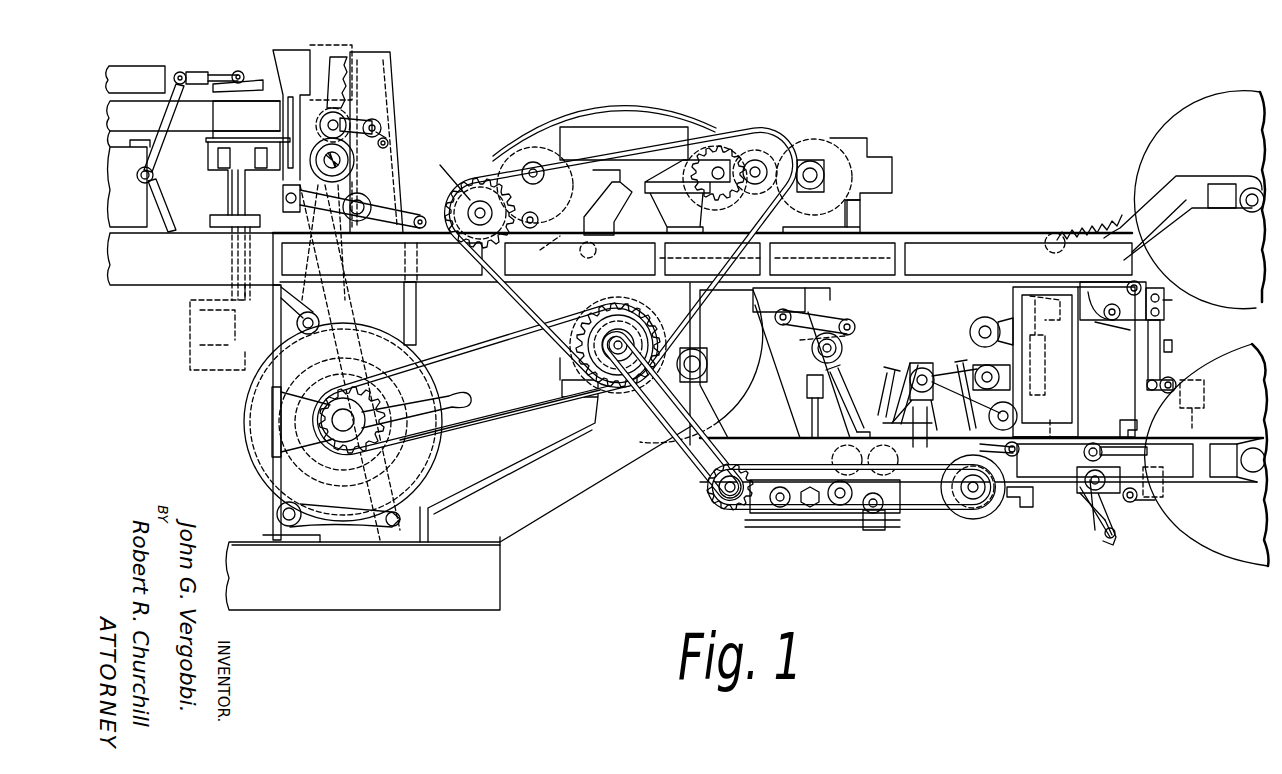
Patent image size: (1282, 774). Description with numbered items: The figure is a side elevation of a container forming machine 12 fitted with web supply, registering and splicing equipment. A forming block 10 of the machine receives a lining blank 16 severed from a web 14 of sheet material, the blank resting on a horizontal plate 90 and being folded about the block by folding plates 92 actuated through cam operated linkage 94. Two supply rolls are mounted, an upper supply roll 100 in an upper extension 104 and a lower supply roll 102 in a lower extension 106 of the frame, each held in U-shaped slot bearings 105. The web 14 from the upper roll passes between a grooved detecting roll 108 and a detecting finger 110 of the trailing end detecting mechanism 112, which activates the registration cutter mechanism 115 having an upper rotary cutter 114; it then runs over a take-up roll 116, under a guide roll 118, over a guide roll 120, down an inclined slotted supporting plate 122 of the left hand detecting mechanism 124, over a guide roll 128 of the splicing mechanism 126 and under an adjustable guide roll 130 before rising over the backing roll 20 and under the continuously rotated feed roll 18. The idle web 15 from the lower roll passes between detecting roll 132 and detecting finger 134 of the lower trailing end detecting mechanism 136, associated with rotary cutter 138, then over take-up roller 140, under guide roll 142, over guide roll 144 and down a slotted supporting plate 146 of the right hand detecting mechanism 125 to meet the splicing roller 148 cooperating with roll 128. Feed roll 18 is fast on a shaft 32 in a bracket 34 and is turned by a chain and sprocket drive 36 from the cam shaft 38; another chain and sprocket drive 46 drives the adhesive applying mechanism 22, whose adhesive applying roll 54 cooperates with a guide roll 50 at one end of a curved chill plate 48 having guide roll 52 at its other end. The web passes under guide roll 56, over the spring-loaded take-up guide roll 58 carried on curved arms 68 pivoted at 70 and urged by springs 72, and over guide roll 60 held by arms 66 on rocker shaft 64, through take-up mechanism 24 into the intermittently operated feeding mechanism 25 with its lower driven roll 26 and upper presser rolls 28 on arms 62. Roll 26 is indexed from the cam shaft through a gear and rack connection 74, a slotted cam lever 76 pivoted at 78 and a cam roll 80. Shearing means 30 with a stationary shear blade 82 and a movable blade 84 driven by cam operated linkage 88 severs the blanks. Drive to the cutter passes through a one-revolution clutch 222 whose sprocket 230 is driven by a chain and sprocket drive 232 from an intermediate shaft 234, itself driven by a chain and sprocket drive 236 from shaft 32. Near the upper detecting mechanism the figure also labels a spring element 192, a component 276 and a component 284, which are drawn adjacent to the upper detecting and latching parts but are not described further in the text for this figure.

The forming block 10 is at (246, 118).
The container forming machine 12 is at (190, 57).
The web 14 is at (400, 182).
The idle web 15 is at (1154, 532).
The lining blank 16 is at (226, 135).
The continuously rotated feed roll 18 is at (582, 320).
The backing roll 20 is at (815, 375).
The adhesive applying mechanism 22 is at (666, 222).
The take-up mechanism 24 is at (456, 150).
The intermittently operated feeding mechanism 25 is at (380, 108).
The lower driven roll 26 is at (382, 259).
The upper presser rolls 28 is at (350, 118).
The shearing means 30 is at (280, 86).
The shaft 32 is at (617, 352).
The bracket 34 is at (570, 375).
The chain and sprocket drive 36 is at (482, 349).
The cam shaft 38 is at (333, 421).
The chain and sprocket drive 46 is at (777, 260).
The curved chill plate 48 is at (626, 104).
The guide roll 50 is at (716, 158).
The guide roll 52 is at (536, 160).
The adhesive applying roll 54 is at (770, 152).
The guide roll 56 is at (580, 260).
The take-up guide roll 58 is at (364, 207).
The guide roll 60 is at (350, 339).
The arms 62 is at (350, 120).
The rocker shaft 64 is at (383, 126).
The arms 66 is at (389, 141).
The curved arms 68 is at (487, 192).
The pivot 70 is at (597, 255).
The springs 72 is at (590, 212).
The gear and rack connection 74 is at (447, 120).
The slotted cam lever 76 is at (462, 410).
The pivot 78 is at (278, 510).
The cam roll 80 is at (363, 573).
The stationary shear blade 82 is at (293, 100).
The movable blade 84 is at (262, 202).
The cam operated linkage 88 is at (418, 307).
The horizontal plate 90 is at (248, 148).
The folding plates 92 is at (210, 165).
The cam operated linkage 94 is at (210, 352).
The upper supply roll 100 is at (1197, 110).
The lower supply roll 102 is at (1182, 558).
The upper extension 104 is at (1212, 176).
The U-shaped slot bearings 105 is at (1248, 210).
The lower extension 106 is at (1224, 442).
The grooved detecting roll 108 is at (1097, 328).
The detecting finger 110 is at (1146, 356).
The trailing end detecting mechanism 112 is at (1172, 303).
The upper rotary cutter 114 is at (976, 365).
The registration cutter mechanism 115 is at (975, 322).
The take-up roll 116 is at (1050, 317).
The guide roll 118 is at (985, 315).
The guide roll 120 is at (860, 349).
The inclined slotted supporting plate 122 is at (833, 410).
The left hand detecting mechanism 124 is at (801, 371).
The right hand detecting mechanism 125 is at (935, 396).
The splicing mechanism 126 is at (828, 535).
The guide roll 128 is at (850, 466).
The adjustable guide roll 130 is at (846, 507).
The detecting roll 132 is at (1097, 531).
The detecting finger 134 is at (1090, 516).
The lower trailing end detecting mechanism 136 is at (1094, 535).
The rotary cutter 138 is at (1008, 460).
The take-up roller 140 is at (1125, 414).
The guide roll 142 is at (1074, 362).
The guide roll 144 is at (960, 367).
The inclined slotted supporting plate 146 is at (884, 365).
The splicing roller 148 is at (880, 515).
The spring 192 is at (1068, 236).
The one-revolution clutch 222 is at (976, 522).
The sprocket 230 is at (977, 513).
The chain and sprocket drive 232 is at (768, 515).
The intermediate shaft 234 is at (722, 500).
The chain and sprocket drive 236 is at (690, 438).
The switch 276 is at (1172, 380).
The stop block 284 is at (1180, 340).